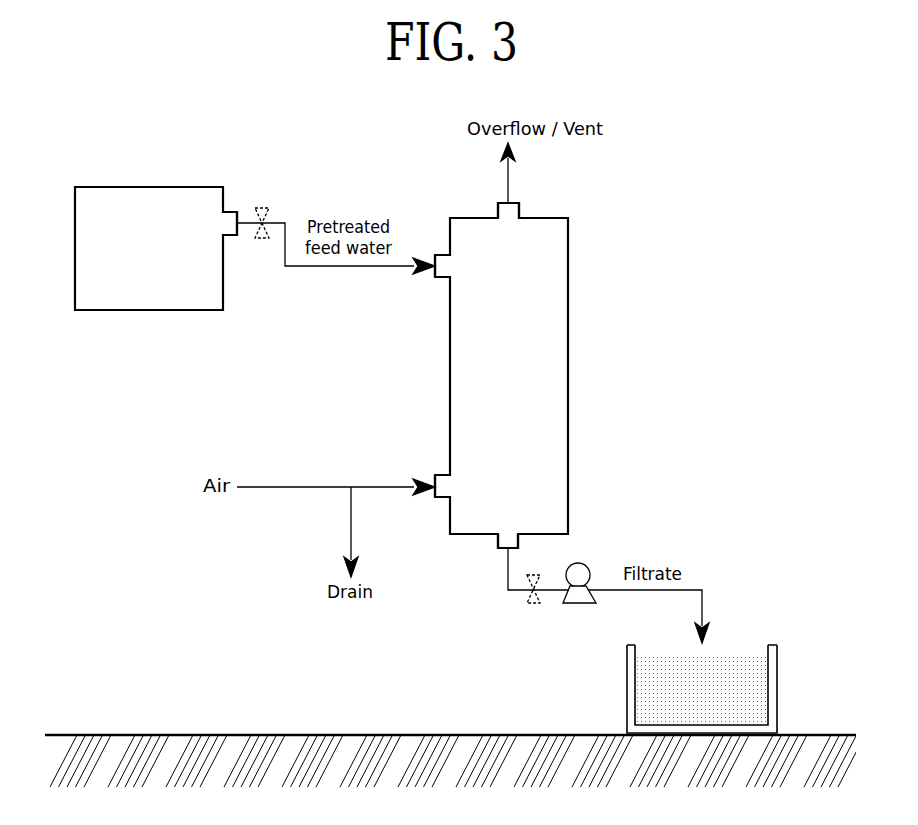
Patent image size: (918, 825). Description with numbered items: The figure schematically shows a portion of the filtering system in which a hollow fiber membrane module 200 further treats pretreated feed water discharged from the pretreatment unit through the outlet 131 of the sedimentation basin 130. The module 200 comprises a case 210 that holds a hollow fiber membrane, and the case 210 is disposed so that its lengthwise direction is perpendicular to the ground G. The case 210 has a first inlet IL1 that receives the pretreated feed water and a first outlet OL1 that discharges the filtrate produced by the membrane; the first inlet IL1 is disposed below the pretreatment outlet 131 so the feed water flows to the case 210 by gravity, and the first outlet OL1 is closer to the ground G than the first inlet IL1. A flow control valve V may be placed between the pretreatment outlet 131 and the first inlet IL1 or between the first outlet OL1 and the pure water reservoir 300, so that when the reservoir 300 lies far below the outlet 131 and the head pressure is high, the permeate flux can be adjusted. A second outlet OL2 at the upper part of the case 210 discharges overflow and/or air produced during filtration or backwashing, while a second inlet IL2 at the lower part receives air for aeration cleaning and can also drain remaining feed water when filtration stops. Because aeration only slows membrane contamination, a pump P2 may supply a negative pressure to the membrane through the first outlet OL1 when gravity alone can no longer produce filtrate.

The sedimentation basin 130 is at (157, 187).
The outlet 131 is at (225, 210).
The flow control valve V is at (268, 210).
The hollow fiber membrane module 200 is at (554, 375).
The case 210 is at (568, 354).
The first inlet IL1 is at (445, 280).
The second inlet IL2 is at (445, 474).
The first outlet OL1 is at (495, 545).
The second outlet OL2 is at (521, 211).
The pump P2 is at (571, 604).
The pure water reservoir 300 is at (777, 674).
The ground G is at (437, 733).